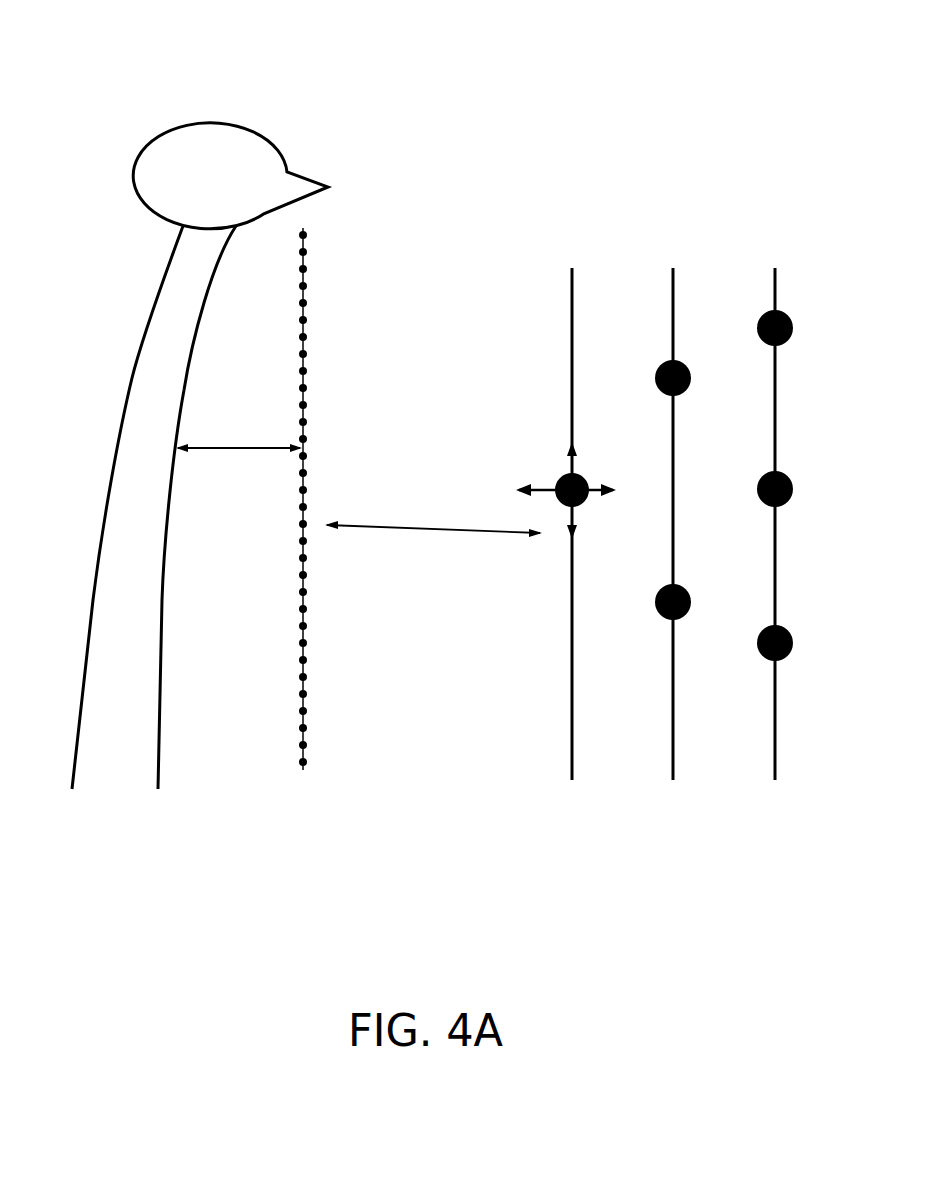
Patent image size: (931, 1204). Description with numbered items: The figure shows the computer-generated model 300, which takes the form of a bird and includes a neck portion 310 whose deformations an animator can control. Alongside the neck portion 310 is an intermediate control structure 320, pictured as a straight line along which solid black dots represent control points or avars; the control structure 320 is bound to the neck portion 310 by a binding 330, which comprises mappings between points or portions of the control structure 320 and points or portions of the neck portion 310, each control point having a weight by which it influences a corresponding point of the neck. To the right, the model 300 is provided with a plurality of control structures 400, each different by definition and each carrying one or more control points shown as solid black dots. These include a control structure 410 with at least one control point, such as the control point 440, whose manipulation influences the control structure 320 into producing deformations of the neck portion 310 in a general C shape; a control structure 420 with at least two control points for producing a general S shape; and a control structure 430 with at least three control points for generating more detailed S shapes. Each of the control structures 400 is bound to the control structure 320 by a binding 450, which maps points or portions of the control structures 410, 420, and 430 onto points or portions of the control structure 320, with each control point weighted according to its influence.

The computer-generated model 300 is at (206, 98).
The neck portion 310 is at (132, 375).
The control structure 320 is at (302, 372).
The binding 330 is at (230, 450).
The control structures 400 is at (684, 204).
The control structure 410 is at (571, 302).
The control structure 420 is at (672, 302).
The control structure 430 is at (774, 302).
The control point 440 is at (556, 484).
The binding 450 is at (418, 530).